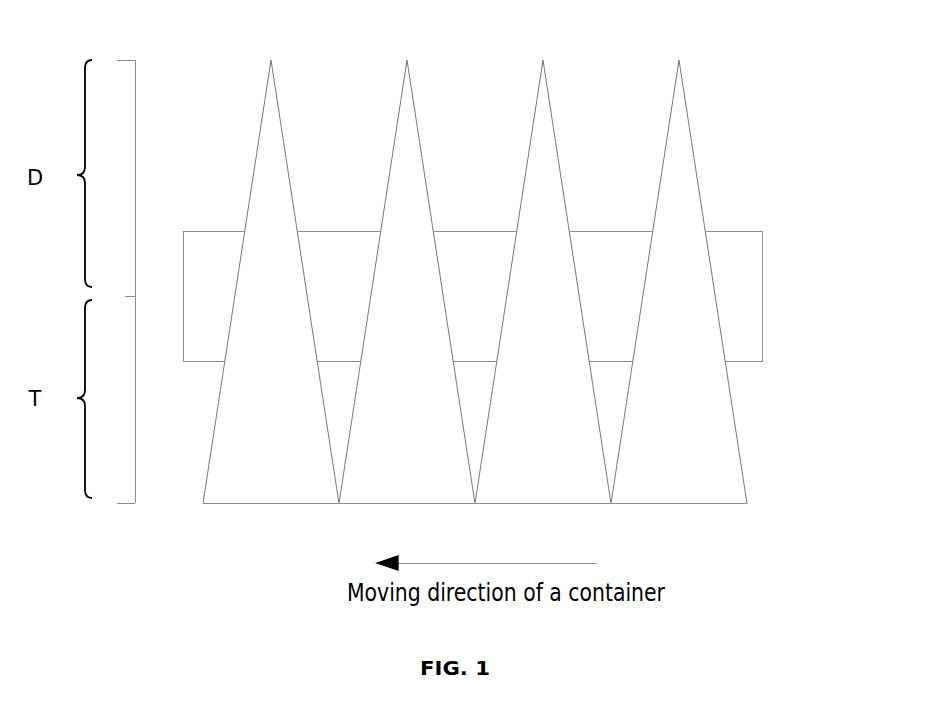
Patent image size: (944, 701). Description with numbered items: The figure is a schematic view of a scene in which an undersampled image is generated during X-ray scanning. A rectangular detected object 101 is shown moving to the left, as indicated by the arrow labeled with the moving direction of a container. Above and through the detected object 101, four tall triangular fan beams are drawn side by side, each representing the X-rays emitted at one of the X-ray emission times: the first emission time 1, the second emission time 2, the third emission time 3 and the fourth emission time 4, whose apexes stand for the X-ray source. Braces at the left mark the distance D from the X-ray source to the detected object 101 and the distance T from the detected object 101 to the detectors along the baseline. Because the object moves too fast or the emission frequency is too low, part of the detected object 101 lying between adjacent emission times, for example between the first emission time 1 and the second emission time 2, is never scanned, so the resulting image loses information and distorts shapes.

The detected object 101 is at (762, 300).
The first detection time point t1 1 is at (271, 260).
The second detection time point t2 2 is at (407, 260).
The third detection time point t3 3 is at (543, 260).
The fourth detection time point t4 4 is at (679, 260).